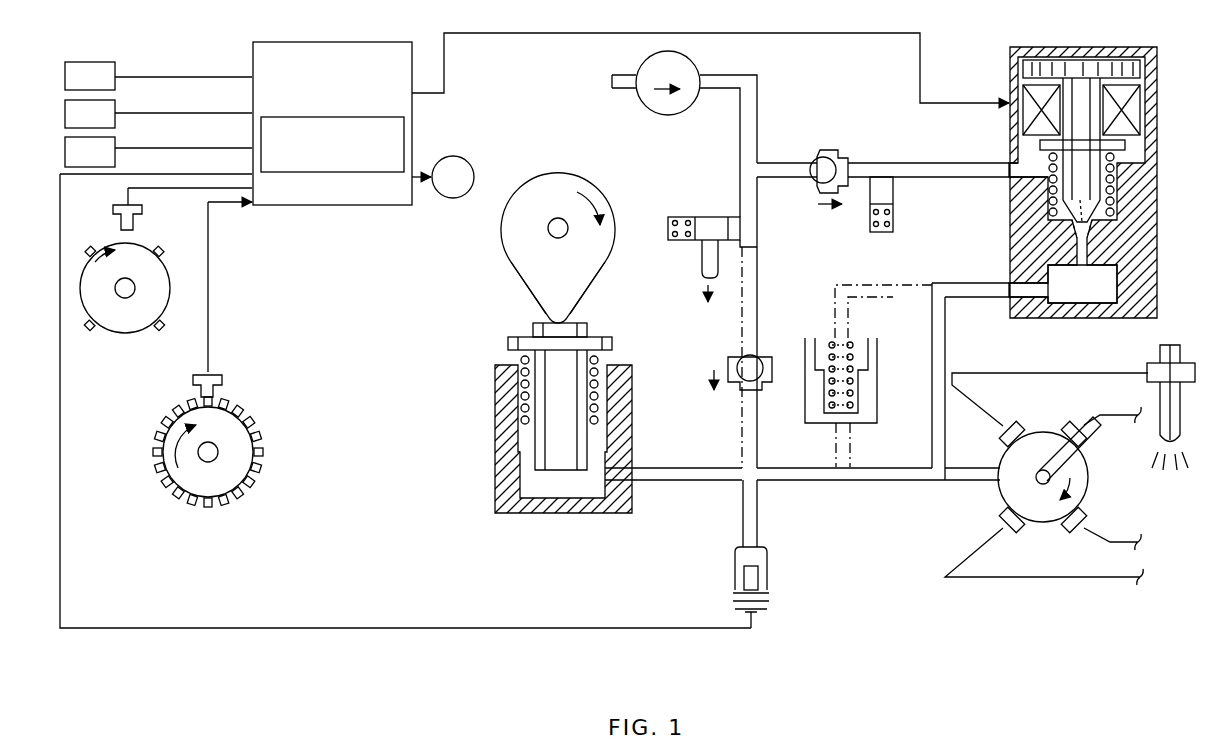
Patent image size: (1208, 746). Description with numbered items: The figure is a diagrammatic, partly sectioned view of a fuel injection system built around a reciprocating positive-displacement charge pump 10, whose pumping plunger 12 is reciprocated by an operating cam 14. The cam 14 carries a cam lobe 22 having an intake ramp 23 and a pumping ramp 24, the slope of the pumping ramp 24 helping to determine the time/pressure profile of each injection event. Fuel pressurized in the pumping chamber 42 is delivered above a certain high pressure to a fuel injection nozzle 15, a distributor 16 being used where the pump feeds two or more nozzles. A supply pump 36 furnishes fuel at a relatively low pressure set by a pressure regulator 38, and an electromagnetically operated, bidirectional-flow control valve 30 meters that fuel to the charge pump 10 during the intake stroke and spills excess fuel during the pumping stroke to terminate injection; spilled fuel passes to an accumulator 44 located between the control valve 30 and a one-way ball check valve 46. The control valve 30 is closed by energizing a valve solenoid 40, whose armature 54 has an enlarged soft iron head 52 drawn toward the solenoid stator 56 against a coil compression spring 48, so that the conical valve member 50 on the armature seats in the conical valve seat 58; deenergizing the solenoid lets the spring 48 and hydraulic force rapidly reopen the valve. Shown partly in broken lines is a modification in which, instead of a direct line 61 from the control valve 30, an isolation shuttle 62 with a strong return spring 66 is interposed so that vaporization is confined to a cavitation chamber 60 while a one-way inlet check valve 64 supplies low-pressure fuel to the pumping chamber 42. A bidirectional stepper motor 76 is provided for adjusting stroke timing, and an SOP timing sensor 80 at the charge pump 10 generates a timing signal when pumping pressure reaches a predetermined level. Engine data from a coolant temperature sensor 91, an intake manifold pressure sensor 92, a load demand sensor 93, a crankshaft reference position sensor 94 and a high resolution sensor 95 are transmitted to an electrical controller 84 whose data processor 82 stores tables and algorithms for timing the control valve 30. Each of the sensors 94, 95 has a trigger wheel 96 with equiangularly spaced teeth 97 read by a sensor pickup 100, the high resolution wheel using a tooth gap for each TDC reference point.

The charge pump 10 is at (430, 305).
The pumping plunger 12 is at (575, 424).
The operating cam 14 is at (575, 284).
The fuel injection nozzle 15 is at (1158, 352).
The distributor 16 is at (983, 500).
The cam lobe 22 is at (548, 313).
The intake ramp 23 is at (592, 280).
The pumping ramp 24 is at (523, 282).
The control valve 30 is at (1000, 128).
The supply pump 36 is at (650, 100).
The pressure regulator 38 is at (700, 214).
The valve solenoid 40 is at (1020, 45).
The pumping chamber 42 is at (575, 485).
The accumulator 44 is at (897, 196).
The one-way ball check valve 46 is at (818, 148).
The coil compression spring 48 is at (1114, 165).
The valve member 50 is at (1090, 208).
The soft iron head 52 is at (1123, 70).
The solenoid armature 54 is at (1080, 118).
The solenoid stator 56 is at (1025, 100).
The valve seat 58 is at (1065, 222).
The cavitation chamber 60 is at (842, 336).
The direct line 61 is at (932, 420).
The isolation shuttle 62 is at (820, 405).
The one-way inlet check valve 64 is at (736, 356).
The return spring 66 is at (855, 358).
The bidirectional stepper motor 76 is at (471, 168).
The SOP timing sensor 80 is at (770, 584).
The data processor 82 is at (395, 132).
The electrical controller 84 is at (252, 57).
The coolant temperature sensor 91 is at (103, 75).
The intake manifold pressure sensor 92 is at (103, 113).
The load demand sensor 93 is at (103, 148).
The crankshaft reference position sensor 94 is at (147, 223).
The high resolution sensor 95 is at (246, 385).
The trigger wheel 96 is at (155, 290).
The teeth 97 is at (160, 252).
The sensor pickup 100 is at (113, 210).